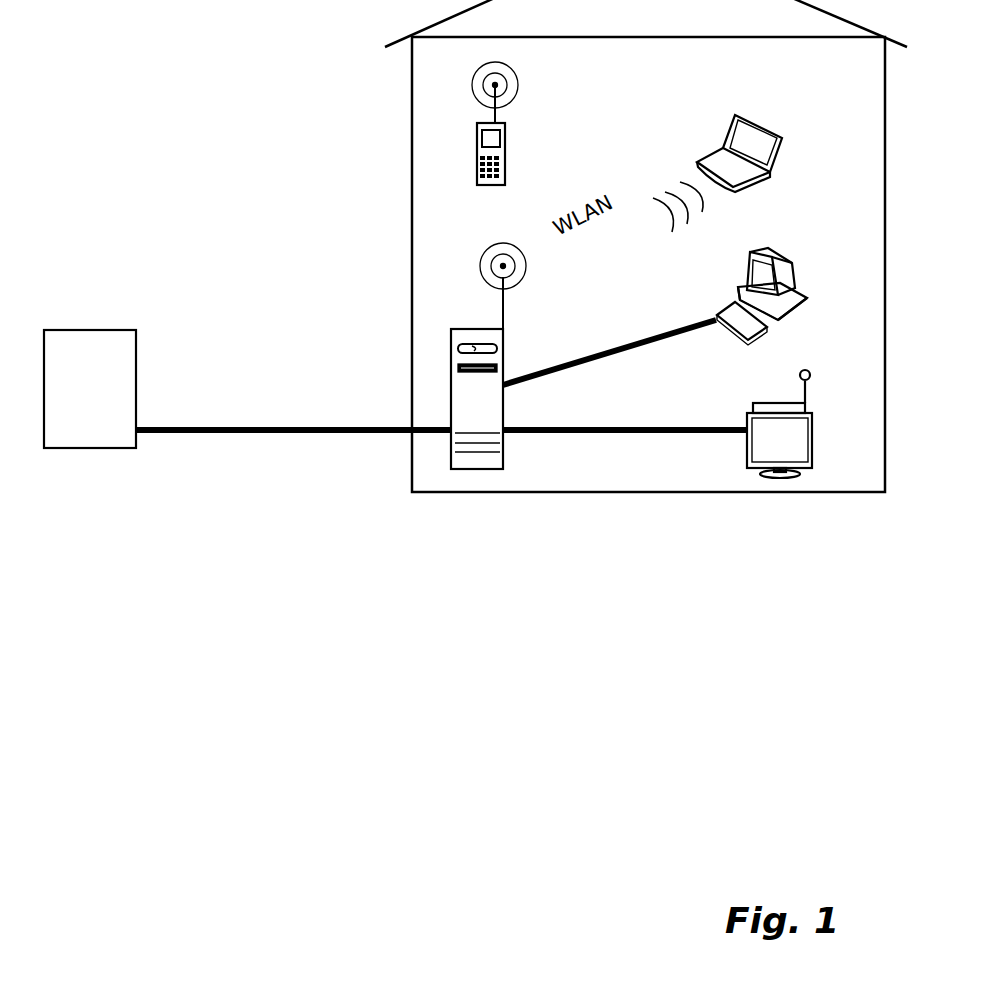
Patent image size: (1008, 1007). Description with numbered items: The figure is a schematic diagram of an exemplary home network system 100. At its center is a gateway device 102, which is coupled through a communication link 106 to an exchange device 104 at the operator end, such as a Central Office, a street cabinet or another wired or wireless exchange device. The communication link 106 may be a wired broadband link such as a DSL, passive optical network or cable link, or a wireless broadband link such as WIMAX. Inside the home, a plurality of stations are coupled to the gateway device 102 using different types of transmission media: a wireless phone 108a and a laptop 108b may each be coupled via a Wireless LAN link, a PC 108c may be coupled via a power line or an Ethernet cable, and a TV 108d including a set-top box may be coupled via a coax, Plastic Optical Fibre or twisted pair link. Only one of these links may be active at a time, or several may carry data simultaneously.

The home network system 100 is at (398, 218).
The gateway device 102 is at (490, 469).
The exchange device 104 is at (127, 448).
The communication link 106 is at (268, 435).
The wireless phone 108a is at (511, 140).
The laptop 108b is at (762, 118).
The PC 108c is at (805, 285).
The TV 108d is at (780, 477).